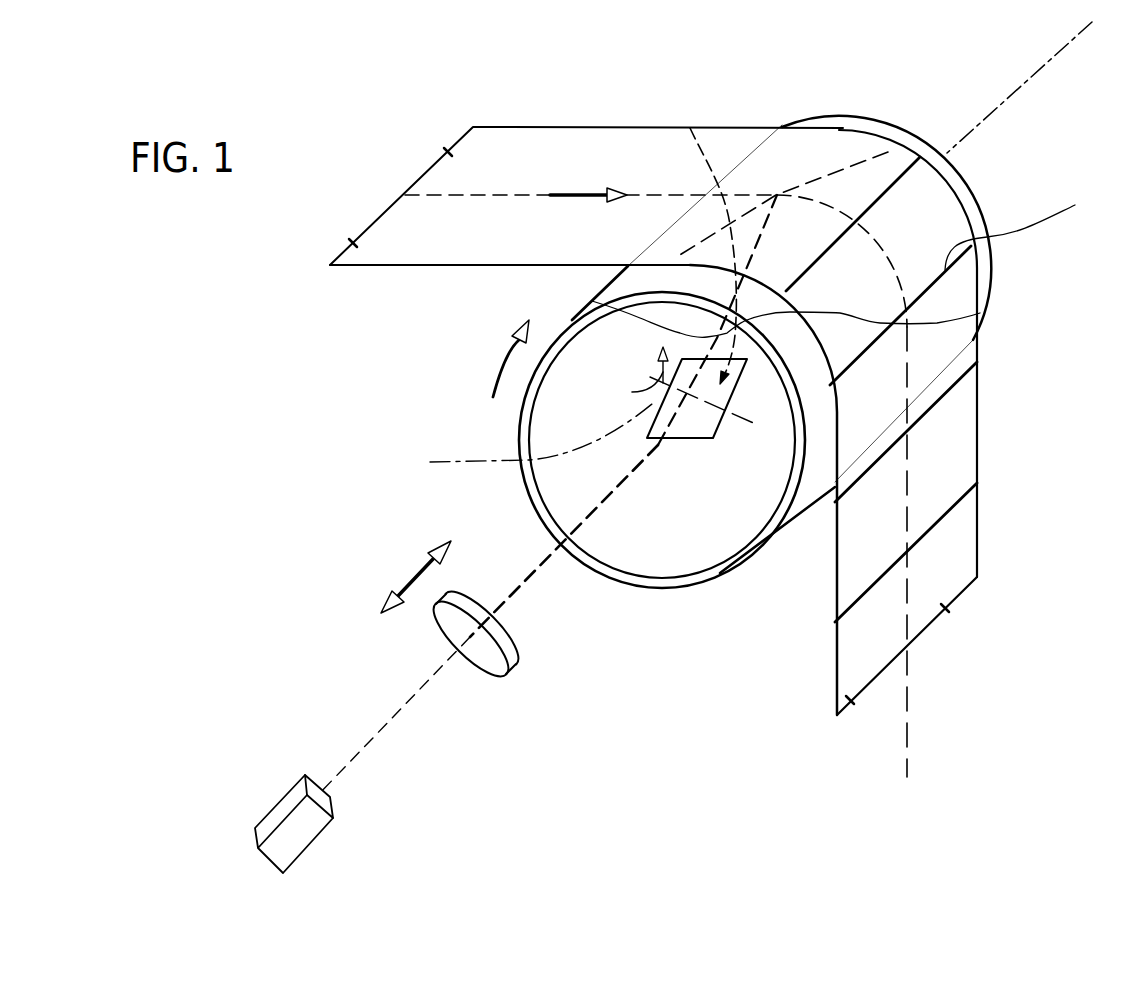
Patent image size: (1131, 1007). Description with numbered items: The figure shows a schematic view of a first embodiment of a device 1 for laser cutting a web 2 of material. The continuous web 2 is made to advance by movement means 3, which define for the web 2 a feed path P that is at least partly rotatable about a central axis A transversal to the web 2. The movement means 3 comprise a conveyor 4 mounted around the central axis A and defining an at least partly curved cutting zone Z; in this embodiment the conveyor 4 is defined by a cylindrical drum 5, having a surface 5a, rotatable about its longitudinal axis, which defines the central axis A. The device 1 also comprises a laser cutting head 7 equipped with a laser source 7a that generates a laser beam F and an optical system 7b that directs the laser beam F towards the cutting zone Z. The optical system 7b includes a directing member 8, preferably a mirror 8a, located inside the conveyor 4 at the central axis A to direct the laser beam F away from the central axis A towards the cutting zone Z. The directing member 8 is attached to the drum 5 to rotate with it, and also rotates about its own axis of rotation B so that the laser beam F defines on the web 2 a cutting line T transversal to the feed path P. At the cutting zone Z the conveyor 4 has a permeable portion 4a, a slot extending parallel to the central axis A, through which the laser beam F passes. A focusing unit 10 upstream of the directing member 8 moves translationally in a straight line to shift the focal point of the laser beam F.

The device for laser cutting 1 is at (1024, 160).
The web 2 is at (607, 148).
The movement means 3 is at (434, 408).
The conveyor 4 is at (683, 612).
The permeable portion 4a is at (690, 128).
The drum 5 is at (613, 618).
The ring surface 5a is at (810, 497).
The laser cutting head 7 is at (364, 572).
The laser source 7a is at (280, 803).
The optical system 7b is at (521, 690).
The directing member 8 is at (980, 313).
The mirror 8a is at (713, 438).
The focusing unit 10 is at (397, 654).
The central axis A is at (995, 108).
The axis of rotation B is at (528, 440).
The laser beam F is at (592, 301).
The feed path P is at (907, 720).
The cutting line T is at (870, 213).
The cutting zone Z is at (842, 152).